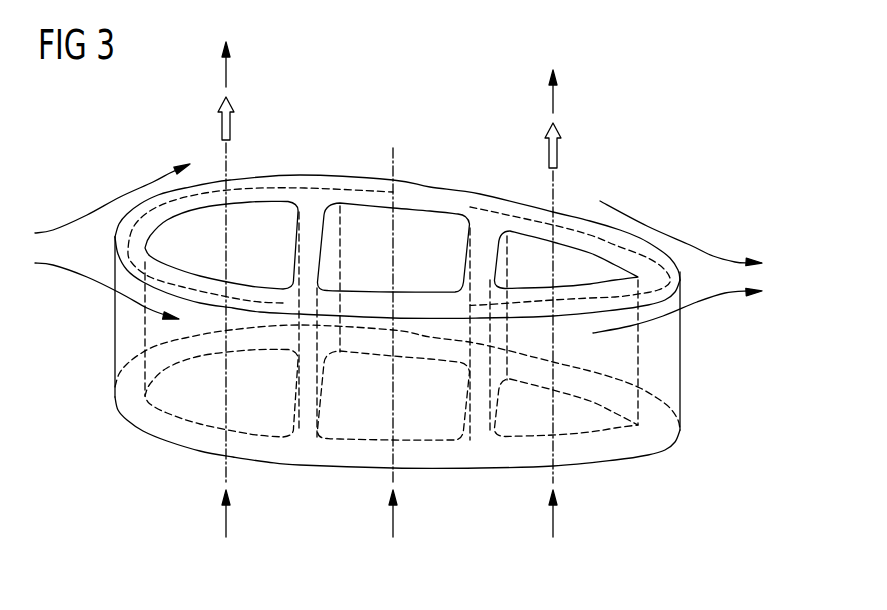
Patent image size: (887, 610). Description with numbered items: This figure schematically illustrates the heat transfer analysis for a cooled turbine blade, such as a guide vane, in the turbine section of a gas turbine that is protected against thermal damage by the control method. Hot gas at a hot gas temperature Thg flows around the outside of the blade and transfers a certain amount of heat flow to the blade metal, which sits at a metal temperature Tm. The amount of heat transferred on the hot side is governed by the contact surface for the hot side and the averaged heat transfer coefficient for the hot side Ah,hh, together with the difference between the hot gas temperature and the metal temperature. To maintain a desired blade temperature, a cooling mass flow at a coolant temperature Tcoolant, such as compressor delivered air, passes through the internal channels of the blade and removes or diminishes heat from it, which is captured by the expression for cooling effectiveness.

The hot gas temperature Thg is at (112, 198).
The metal temperature Tm is at (399, 241).
The contact surface and averaged heat transfer coefficient for hot side Ah,hh is at (438, 321).
The coolant temperature Tcoolant is at (389, 310).